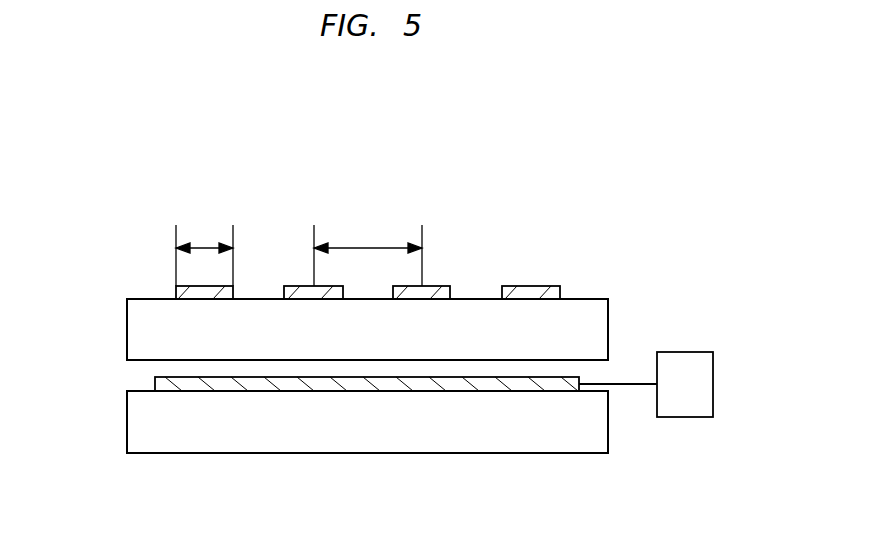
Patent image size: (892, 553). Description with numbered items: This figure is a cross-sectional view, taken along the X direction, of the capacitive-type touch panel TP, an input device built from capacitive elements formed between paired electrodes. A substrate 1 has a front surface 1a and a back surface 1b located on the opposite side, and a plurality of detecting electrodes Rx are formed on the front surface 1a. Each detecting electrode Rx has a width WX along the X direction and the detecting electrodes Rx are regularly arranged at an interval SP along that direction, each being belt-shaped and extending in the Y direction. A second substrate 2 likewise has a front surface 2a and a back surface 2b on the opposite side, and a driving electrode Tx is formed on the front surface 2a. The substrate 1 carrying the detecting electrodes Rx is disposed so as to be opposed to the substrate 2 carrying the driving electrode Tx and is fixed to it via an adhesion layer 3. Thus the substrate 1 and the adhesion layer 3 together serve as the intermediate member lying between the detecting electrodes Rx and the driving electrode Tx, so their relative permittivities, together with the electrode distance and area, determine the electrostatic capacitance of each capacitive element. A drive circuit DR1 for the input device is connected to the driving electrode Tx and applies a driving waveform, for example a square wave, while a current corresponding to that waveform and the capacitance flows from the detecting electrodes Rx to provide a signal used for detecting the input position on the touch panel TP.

The substrate 1 is at (153, 331).
The front surface of substrate 1 1a is at (141, 298).
The back surface of substrate 1 1b is at (143, 360).
The substrate 2 is at (153, 424).
The front surface of substrate 2 2a is at (143, 391).
The back surface of substrate 2 2b is at (141, 453).
The adhesion layer 3 is at (598, 370).
The detecting electrode Rx is at (528, 293).
The driving electrode Tx is at (262, 386).
The touch panel TP is at (590, 276).
The drive circuit DR1 is at (690, 389).
The width WX is at (204, 252).
The interval SP is at (368, 252).